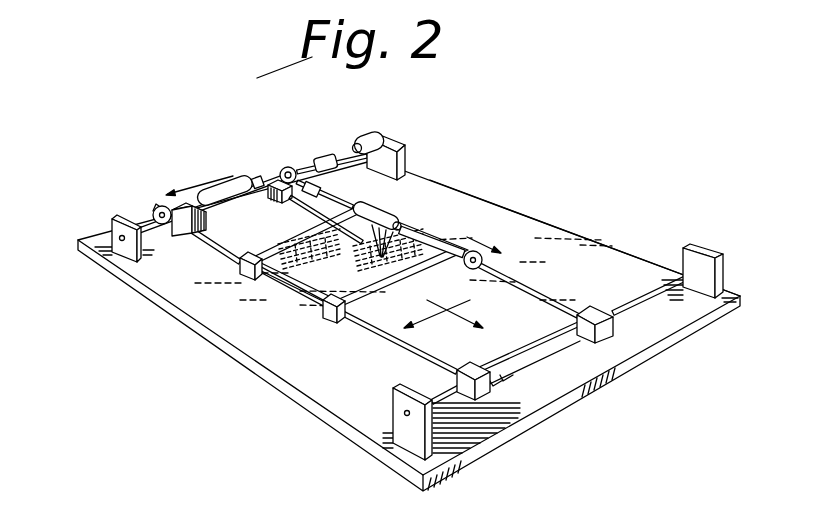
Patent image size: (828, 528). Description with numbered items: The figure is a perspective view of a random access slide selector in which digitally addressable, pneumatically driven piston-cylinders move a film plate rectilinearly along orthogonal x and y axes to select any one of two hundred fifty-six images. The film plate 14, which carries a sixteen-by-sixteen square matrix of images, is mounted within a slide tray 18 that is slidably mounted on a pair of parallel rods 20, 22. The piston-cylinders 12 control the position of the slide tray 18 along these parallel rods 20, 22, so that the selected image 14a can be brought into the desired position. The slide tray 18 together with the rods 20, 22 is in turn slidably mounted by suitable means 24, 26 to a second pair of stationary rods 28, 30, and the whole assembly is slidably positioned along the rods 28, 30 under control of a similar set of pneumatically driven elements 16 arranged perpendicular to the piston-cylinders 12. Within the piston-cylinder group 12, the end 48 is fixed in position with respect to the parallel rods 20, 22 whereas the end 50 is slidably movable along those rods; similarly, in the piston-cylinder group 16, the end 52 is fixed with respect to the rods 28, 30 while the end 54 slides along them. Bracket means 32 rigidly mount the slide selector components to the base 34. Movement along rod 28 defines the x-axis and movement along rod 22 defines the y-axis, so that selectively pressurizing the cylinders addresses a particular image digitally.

The piston-cylinders 12 is at (428, 221).
The film plate 14 is at (333, 273).
The image 14a is at (444, 246).
The pneumatically driven elements 16 is at (252, 147).
The slide tray 18 is at (374, 288).
The parallel rod 20 is at (424, 340).
The parallel rod 22 is at (540, 307).
The mounting means 24 is at (234, 206).
The mounting means 26 is at (537, 358).
The stationary rod 28 is at (466, 187).
The stationary rod 30 is at (635, 298).
The bracket means 32 is at (120, 217).
The base 34 is at (574, 237).
The fixed end 48 is at (290, 168).
The slidable end 50 is at (484, 262).
The fixed end 52 is at (364, 133).
The slidable end 54 is at (159, 205).